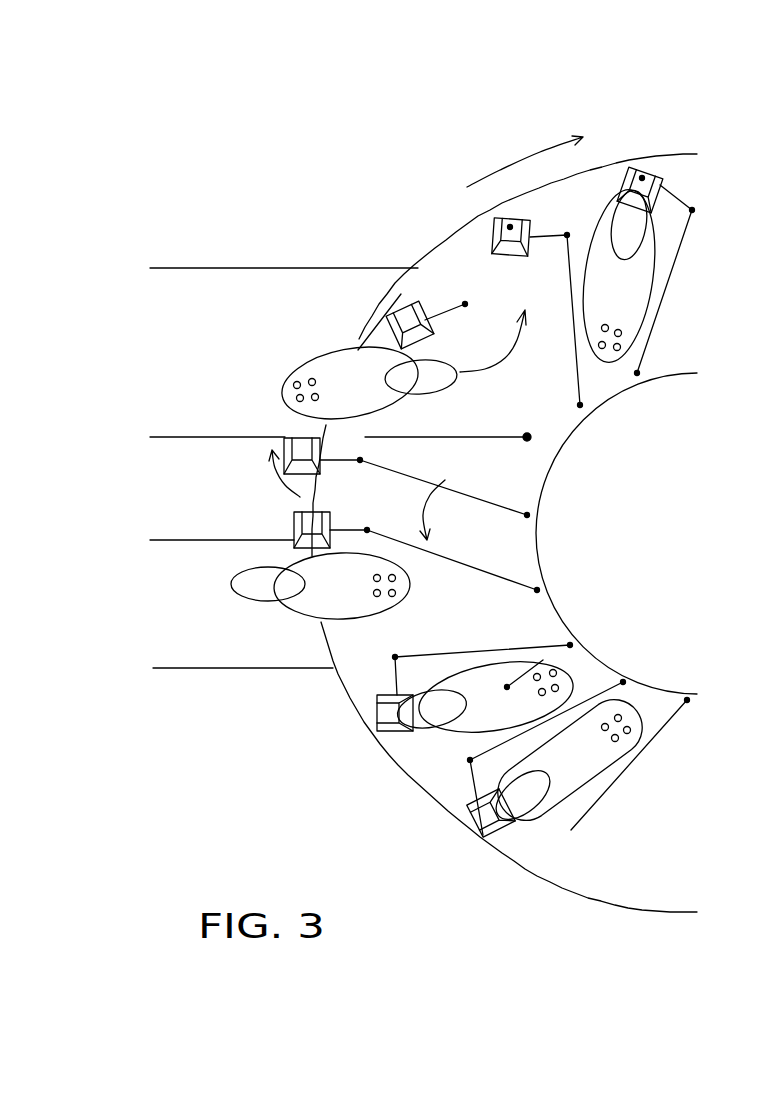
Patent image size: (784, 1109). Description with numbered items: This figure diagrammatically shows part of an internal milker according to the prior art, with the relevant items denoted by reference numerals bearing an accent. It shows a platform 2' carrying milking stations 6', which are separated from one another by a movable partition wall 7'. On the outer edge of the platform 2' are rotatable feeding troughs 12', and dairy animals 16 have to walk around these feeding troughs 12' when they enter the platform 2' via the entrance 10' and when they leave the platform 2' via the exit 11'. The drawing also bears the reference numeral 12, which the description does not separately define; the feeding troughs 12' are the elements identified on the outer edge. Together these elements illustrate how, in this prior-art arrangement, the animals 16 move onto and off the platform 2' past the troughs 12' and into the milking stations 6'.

The platform 2' is at (584, 378).
The milking stations 6' is at (409, 779).
The movable partition wall 7' is at (481, 504).
The entrance 10' is at (314, 362).
The exit 11' is at (281, 586).
The drive element 12 is at (637, 181).
The rotatable feeding troughs 12' is at (346, 572).
The dairy animals 16 is at (343, 382).